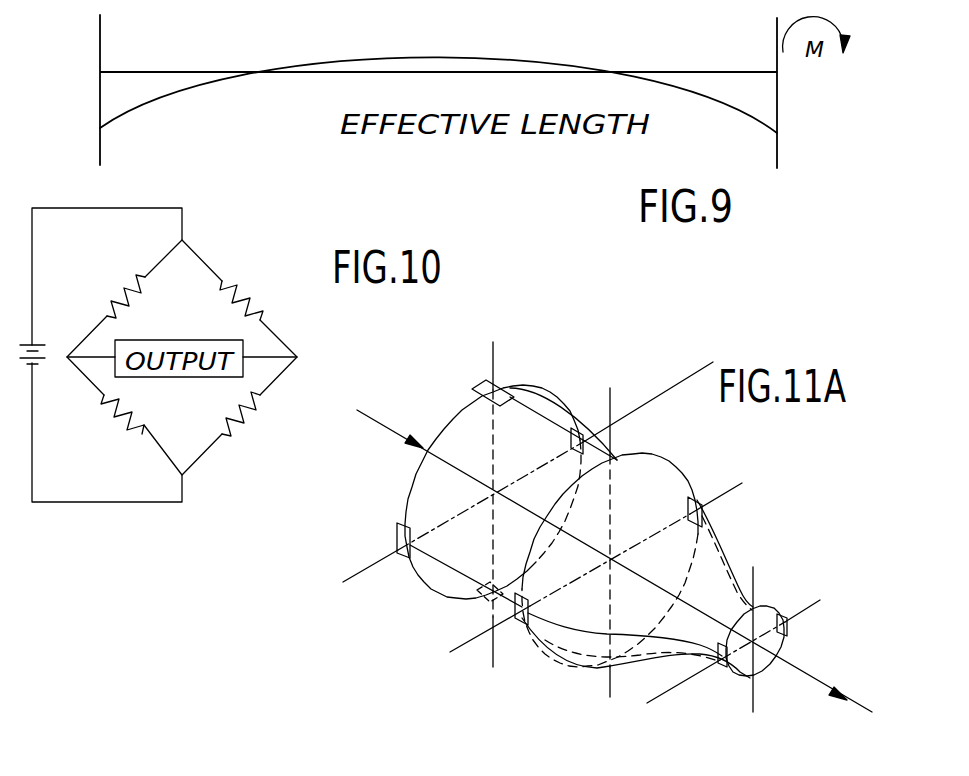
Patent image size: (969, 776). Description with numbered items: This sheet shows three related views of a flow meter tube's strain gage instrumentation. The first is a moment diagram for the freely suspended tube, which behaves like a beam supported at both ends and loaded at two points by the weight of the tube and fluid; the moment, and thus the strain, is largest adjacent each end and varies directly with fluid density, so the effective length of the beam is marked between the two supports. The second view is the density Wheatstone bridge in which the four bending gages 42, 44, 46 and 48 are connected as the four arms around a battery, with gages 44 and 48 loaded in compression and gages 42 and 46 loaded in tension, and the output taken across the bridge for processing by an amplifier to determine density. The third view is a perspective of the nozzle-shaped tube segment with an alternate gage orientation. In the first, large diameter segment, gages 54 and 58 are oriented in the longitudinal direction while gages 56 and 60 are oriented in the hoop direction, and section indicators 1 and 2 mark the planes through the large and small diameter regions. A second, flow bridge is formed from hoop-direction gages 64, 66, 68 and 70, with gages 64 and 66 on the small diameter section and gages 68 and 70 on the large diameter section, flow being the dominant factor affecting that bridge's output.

In FIG. 11A, the section line 1- 1 is at (713, 362).
In FIG. 11A, the section line 2- 2 is at (820, 601).
In FIG. 10, the gage 42 is at (130, 425).
In FIG. 10, the gage 44 is at (258, 410).
In FIG. 10, the gage 46 is at (238, 300).
In FIG. 10, the gage 48 is at (128, 284).
In FIG. 11A, the gage 54 is at (500, 384).
In FIG. 11A, the gage 56 is at (520, 575).
In FIG. 11A, the gage 58 is at (477, 598).
In FIG. 11A, the gage 60 is at (396, 537).
In FIG. 11A, the gage 64 is at (790, 632).
In FIG. 11A, the gage 66 is at (722, 668).
In FIG. 11A, the gage 68 is at (704, 497).
In FIG. 11A, the gage 70 is at (518, 628).